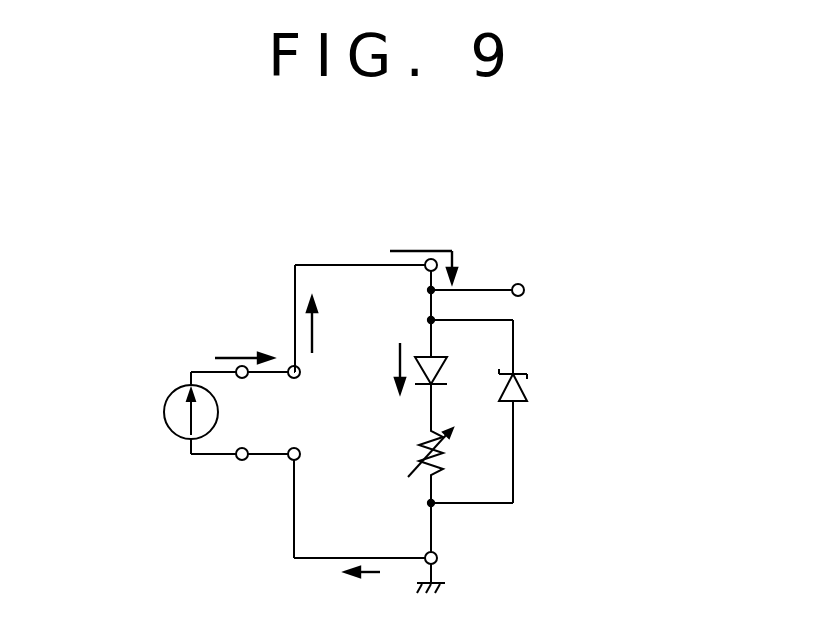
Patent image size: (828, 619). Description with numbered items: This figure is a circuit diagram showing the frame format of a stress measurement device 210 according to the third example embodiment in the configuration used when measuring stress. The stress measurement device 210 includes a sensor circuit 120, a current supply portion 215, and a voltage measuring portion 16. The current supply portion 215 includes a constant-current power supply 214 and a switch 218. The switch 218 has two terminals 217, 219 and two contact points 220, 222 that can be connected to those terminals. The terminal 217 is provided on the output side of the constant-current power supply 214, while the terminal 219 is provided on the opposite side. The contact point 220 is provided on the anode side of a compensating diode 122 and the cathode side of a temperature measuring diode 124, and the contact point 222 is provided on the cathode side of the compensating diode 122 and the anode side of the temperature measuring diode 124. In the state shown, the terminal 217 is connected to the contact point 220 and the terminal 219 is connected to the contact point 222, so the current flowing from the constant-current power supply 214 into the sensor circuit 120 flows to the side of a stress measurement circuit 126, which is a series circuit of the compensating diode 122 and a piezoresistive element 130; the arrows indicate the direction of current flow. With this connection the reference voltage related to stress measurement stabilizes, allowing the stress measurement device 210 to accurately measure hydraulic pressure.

The stress measurement device 210 is at (565, 217).
The voltage measuring portion 16 is at (528, 290).
The compensating diode 122 is at (427, 355).
The temperature measuring diode 124 is at (522, 380).
The stress measurement circuit 126 is at (452, 401).
The sensor circuit 120 is at (522, 455).
The piezoresistive element 130 is at (422, 451).
The constant-current power supply 214 is at (164, 411).
The current supply portion 215 is at (213, 465).
The terminal 217 is at (272, 378).
The switch 218 is at (281, 353).
The terminal 219 is at (268, 458).
The contact point 220 is at (300, 372).
The contact point 222 is at (300, 456).